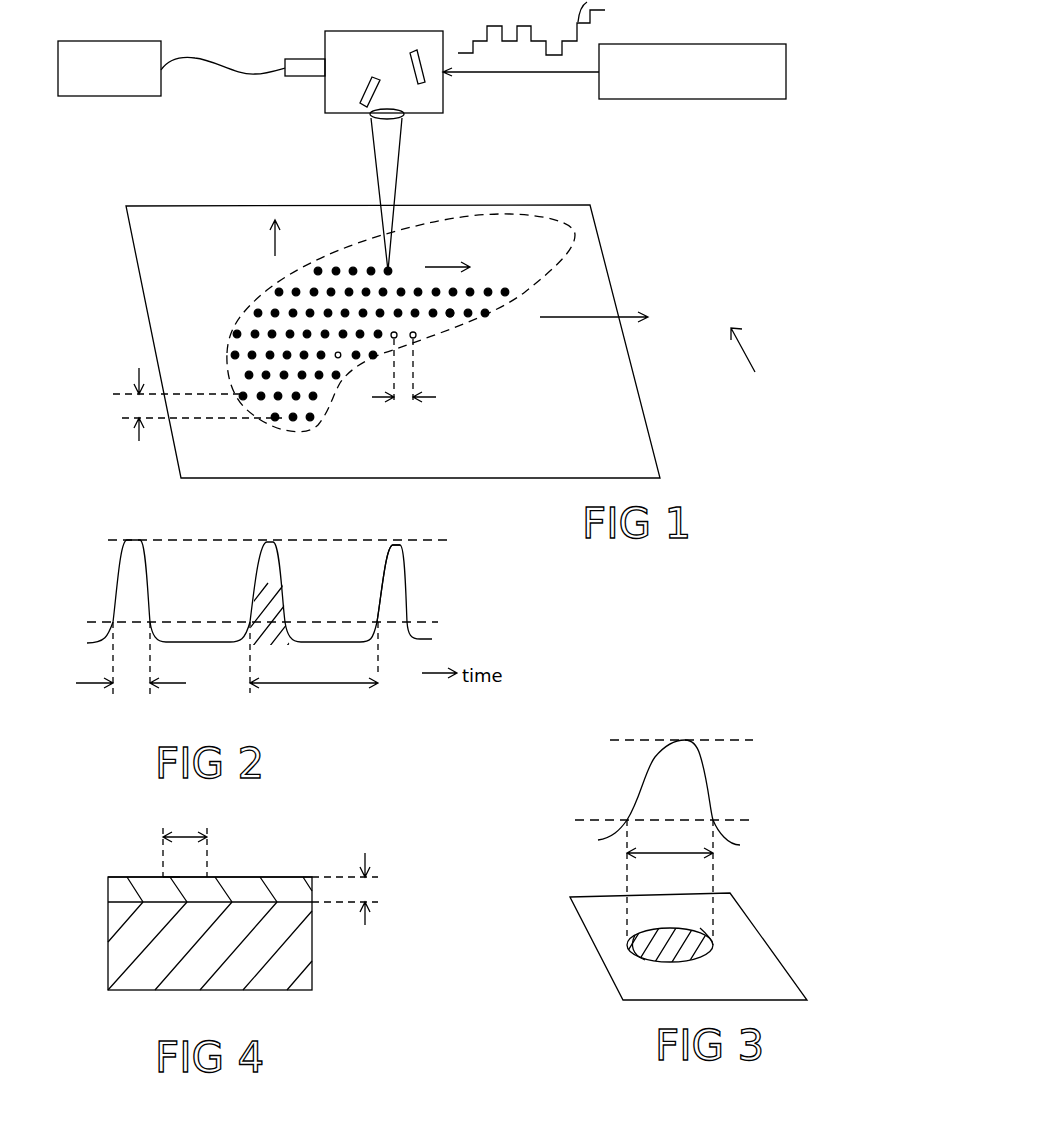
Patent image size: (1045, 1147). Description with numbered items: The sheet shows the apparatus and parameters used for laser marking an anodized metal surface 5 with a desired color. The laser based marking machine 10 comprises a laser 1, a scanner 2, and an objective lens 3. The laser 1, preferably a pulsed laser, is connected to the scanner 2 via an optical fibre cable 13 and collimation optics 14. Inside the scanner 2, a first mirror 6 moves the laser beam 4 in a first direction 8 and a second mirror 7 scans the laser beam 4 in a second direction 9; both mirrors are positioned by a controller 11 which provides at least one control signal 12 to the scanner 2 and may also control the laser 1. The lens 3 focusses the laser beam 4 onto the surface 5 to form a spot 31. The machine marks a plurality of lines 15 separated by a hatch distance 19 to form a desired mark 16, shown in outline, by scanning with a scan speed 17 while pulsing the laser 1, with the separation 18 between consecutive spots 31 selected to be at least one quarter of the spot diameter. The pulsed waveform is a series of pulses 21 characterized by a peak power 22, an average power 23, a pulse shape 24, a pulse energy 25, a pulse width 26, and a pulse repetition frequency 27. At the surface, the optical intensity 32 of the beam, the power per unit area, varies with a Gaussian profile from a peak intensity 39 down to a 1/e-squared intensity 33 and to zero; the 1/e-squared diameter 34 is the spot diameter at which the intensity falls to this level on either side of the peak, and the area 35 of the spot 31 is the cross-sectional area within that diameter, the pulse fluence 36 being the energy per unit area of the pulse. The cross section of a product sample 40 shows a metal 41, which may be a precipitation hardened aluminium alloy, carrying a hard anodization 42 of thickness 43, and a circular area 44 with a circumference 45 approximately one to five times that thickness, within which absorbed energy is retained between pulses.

In FIG. 1, the laser 1 is at (110, 97).
In FIG. 1, the scanner 2 is at (358, 31).
In FIG. 1, the objective lens 3 is at (371, 113).
In FIG. 1, the laser beam 4 is at (397, 176).
In FIG. 1, the anodized metal surface 5 is at (605, 255).
In FIG. 3, the anodized metal surface 5 is at (787, 967).
In FIG. 4, the anodized metal surface 5 is at (150, 876).
In FIG. 1, the first mirror 6 is at (427, 55).
In FIG. 1, the second mirror 7 is at (367, 93).
In FIG. 1, the first direction 8 is at (606, 317).
In FIG. 1, the second direction 9 is at (268, 240).
In FIG. 1, the laser based marking machine 10 is at (754, 367).
In FIG. 1, the controller 11 is at (688, 43).
In FIG. 1, the control signal 12 is at (510, 27).
In FIG. 1, the optical fibre cable 13 is at (222, 67).
In FIG. 1, the collimation optics 14 is at (307, 60).
In FIG. 1, the lines 15 is at (278, 293).
In FIG. 1, the desired mark 16 is at (285, 428).
In FIG. 1, the scan speed 17 is at (441, 264).
In FIG. 1, the separation 18 is at (430, 396).
In FIG. 1, the hatch distance 19 is at (139, 372).
In FIG. 2, the pulses 21 is at (407, 562).
In FIG. 2, the peak power 22 is at (107, 540).
In FIG. 2, the average power 23 is at (443, 620).
In FIG. 2, the pulse shape 24 is at (387, 556).
In FIG. 2, the pulse energy 25 is at (280, 592).
In FIG. 2, the pulse width 26 is at (87, 688).
In FIG. 2, the pulse repetition frequency 27 is at (322, 729).
In FIG. 1, the spot 31 is at (450, 317).
In FIG. 3, the spot 31 is at (658, 928).
In FIG. 3, the optical intensity 32 is at (703, 777).
In FIG. 3, the 1/e^2 intensity 33 is at (577, 820).
In FIG. 3, the 1/e^2 diameter 34 is at (658, 853).
In FIG. 3, the area 35 is at (713, 944).
In FIG. 3, the pulse fluence 36 is at (650, 952).
In FIG. 3, the peak intensity 39 is at (640, 740).
In FIG. 4, the product sample 40 is at (345, 999).
In FIG. 4, the metal 41 is at (313, 970).
In FIG. 4, the anodization 42 is at (232, 876).
In FIG. 4, the thickness 43 is at (364, 858).
In FIG. 4, the circular area 44 is at (180, 876).
In FIG. 4, the circumference 45 is at (178, 832).